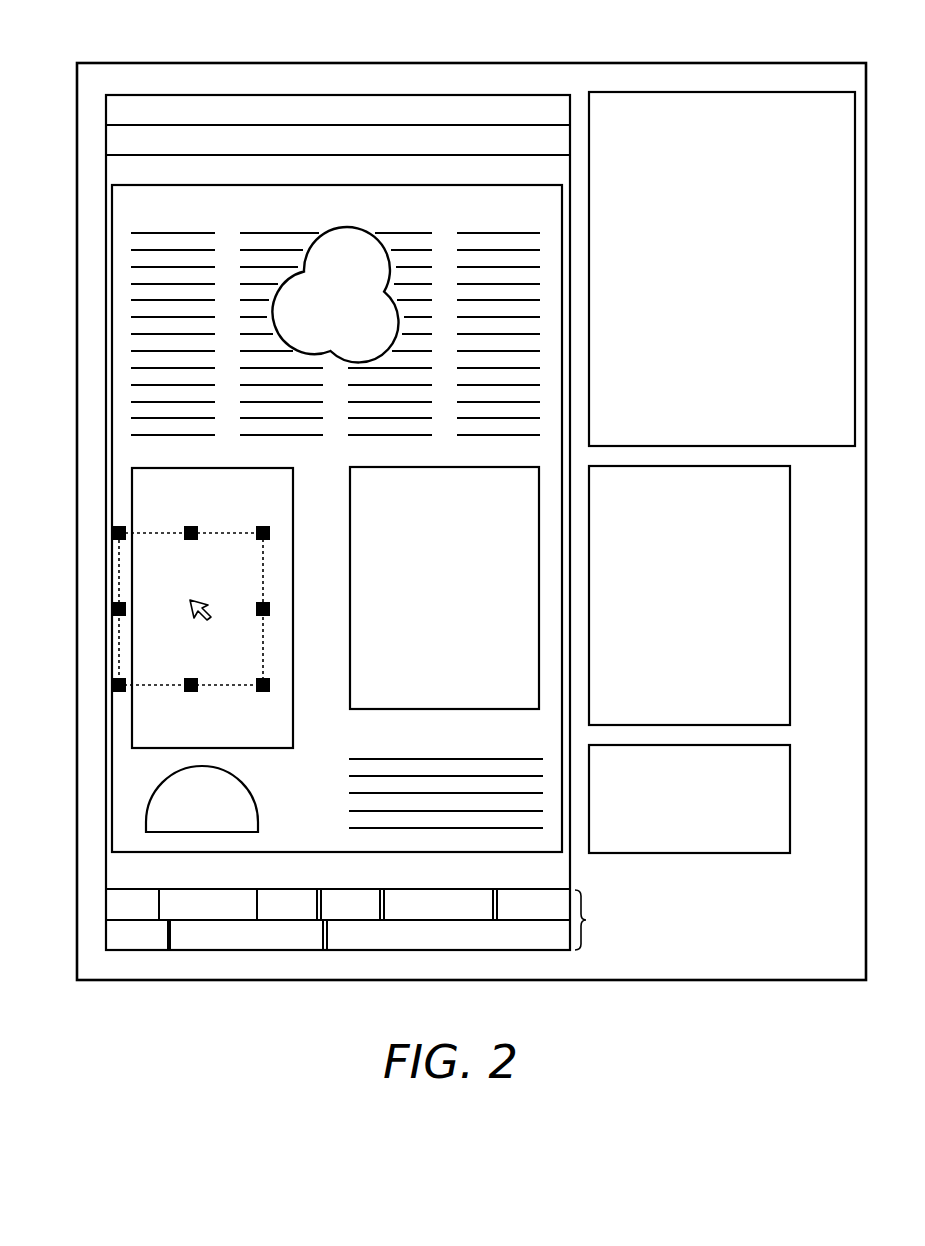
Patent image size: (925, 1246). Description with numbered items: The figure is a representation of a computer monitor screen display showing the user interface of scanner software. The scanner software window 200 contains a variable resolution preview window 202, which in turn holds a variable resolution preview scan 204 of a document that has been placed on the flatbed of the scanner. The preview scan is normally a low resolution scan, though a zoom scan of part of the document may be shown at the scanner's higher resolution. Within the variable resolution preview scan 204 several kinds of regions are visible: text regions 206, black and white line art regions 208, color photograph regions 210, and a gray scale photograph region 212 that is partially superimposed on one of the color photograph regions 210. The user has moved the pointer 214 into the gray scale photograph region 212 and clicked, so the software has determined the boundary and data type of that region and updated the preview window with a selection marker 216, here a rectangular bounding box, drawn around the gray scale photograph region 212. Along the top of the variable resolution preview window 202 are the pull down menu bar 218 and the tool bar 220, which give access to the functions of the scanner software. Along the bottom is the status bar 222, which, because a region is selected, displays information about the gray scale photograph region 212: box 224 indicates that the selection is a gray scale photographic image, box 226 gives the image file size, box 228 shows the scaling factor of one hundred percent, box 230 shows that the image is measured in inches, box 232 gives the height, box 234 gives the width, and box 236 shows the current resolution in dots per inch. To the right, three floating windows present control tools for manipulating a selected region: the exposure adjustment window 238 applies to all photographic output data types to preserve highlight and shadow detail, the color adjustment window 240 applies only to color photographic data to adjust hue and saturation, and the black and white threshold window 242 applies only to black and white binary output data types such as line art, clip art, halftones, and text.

The scanner software window 200 is at (471, 494).
The variable resolution preview window 202 is at (292, 522).
The variable resolution preview scan 204 is at (337, 504).
The text regions 206 is at (337, 507).
The black and white line art regions 208 is at (342, 649).
The color photograph regions 210 is at (265, 468).
The gray scale photograph region 212 is at (192, 583).
The pointer 214 is at (221, 584).
The selection marker 216 is at (191, 609).
The pull down menu bar 218 is at (294, 105).
The tool bar 220 is at (294, 135).
The status bar 222 is at (373, 909).
The box 224 is at (246, 950).
The box 226 is at (448, 950).
The box 228 is at (530, 888).
The box 230 is at (438, 888).
The box 232 is at (341, 888).
The box 234 is at (270, 888).
The box 236 is at (149, 888).
The exposure adjustment window 238 is at (722, 297).
The color adjustment window 240 is at (716, 595).
The black and white threshold window 242 is at (713, 799).